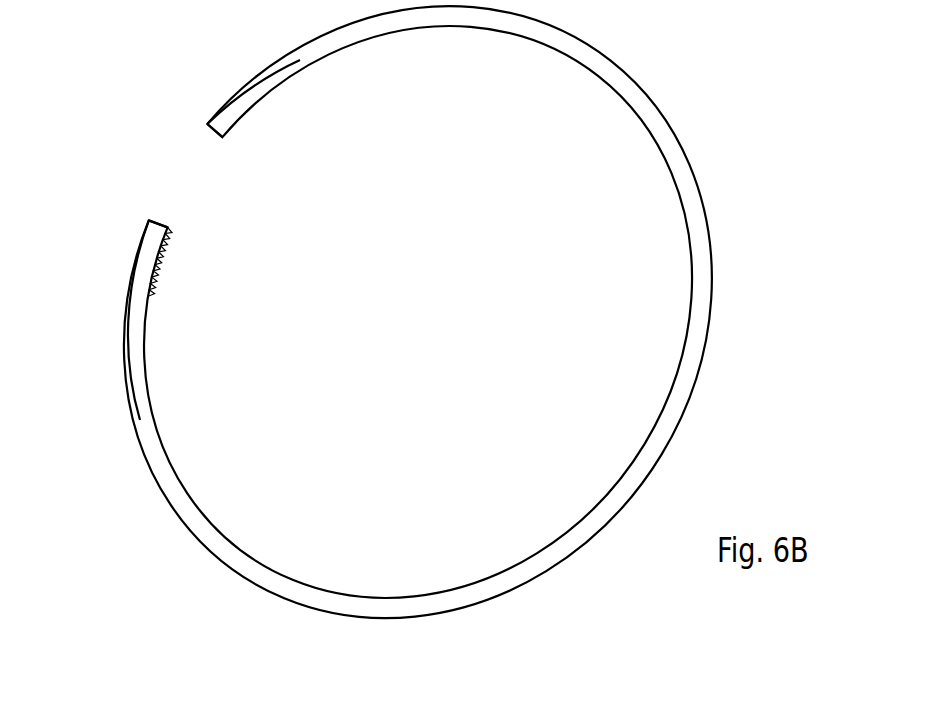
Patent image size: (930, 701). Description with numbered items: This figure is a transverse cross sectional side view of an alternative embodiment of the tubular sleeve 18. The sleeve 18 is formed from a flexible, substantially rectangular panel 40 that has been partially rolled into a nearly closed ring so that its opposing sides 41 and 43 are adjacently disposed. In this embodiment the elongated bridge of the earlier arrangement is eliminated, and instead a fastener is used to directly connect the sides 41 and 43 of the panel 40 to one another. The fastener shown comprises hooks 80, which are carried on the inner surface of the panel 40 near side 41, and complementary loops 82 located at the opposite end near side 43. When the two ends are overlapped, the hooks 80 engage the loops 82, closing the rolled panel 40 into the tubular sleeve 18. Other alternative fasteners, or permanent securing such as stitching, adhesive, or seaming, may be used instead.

The sleeve 18 is at (134, 469).
The panel 40 is at (128, 331).
The side 41 is at (165, 319).
The side 43 is at (257, 127).
The hooks 80 is at (164, 261).
The loops 82 is at (240, 90).